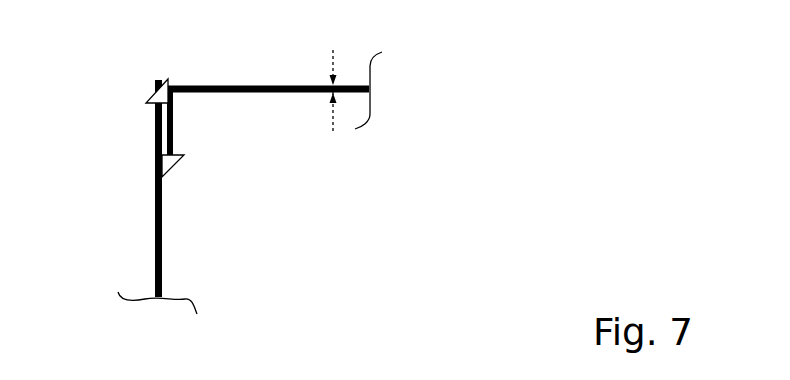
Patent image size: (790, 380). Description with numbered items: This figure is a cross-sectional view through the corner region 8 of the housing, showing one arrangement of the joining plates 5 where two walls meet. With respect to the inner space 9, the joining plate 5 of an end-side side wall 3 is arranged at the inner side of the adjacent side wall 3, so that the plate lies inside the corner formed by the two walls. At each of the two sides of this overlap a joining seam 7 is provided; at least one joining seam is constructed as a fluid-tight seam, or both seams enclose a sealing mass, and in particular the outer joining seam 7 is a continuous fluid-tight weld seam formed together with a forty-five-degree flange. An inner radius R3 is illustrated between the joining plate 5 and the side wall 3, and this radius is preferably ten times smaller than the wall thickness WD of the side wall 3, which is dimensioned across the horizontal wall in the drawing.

The side wall 3 is at (276, 85).
The joining plate 5 is at (174, 103).
The joining seam 7 is at (150, 99).
The corner region 8 is at (149, 68).
The inner space 9 is at (312, 224).
The inner radius R3 is at (183, 100).
The wall thickness WD is at (353, 79).